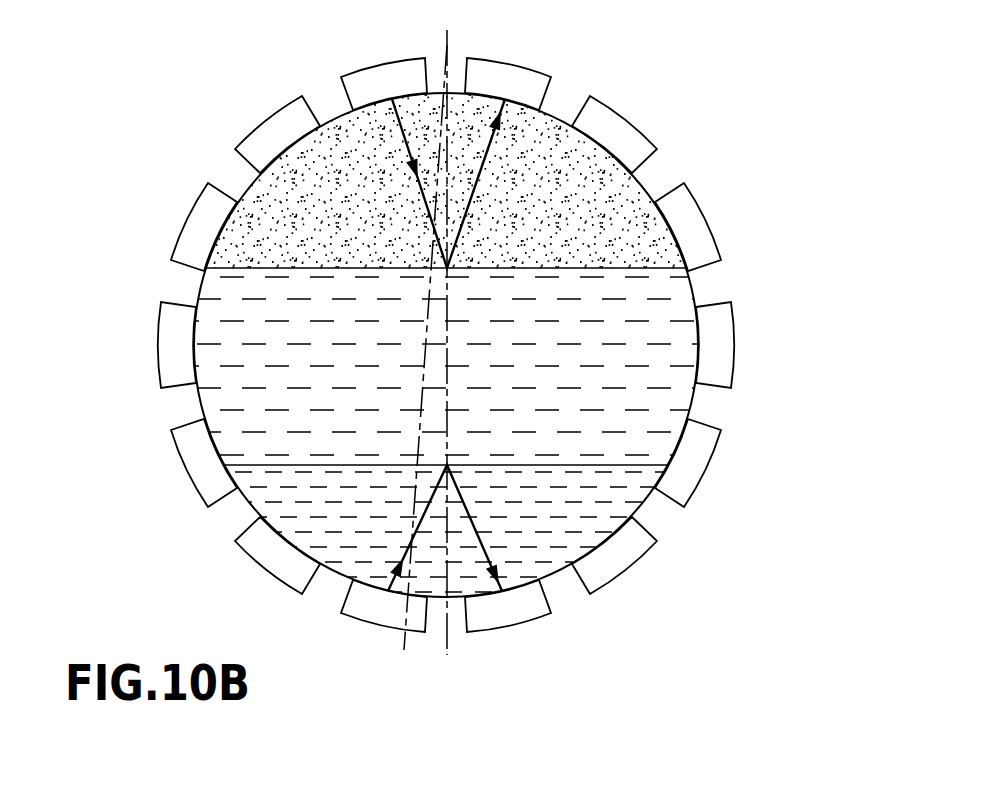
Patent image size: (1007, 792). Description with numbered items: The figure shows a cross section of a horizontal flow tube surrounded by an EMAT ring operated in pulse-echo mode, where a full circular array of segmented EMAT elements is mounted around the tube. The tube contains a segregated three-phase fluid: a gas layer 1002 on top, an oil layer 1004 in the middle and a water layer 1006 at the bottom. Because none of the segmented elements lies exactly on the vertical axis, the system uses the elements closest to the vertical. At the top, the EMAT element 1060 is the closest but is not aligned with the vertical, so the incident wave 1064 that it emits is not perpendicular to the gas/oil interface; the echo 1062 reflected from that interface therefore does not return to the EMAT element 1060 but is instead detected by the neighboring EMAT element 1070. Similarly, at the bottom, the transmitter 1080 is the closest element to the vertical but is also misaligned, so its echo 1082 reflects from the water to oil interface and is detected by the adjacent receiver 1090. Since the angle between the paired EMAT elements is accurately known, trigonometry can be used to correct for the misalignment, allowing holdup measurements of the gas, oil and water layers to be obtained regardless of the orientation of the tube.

The gas layer 1002 is at (575, 163).
The oil layer 1004 is at (638, 333).
The water layer 1006 is at (602, 507).
The EMAT element 1060 is at (362, 72).
The echo 1062 is at (488, 175).
The incident wave 1064 is at (440, 147).
The EMAT element 1070 is at (530, 70).
The transmitter 1080 is at (362, 620).
The echo 1082 is at (417, 523).
The receiver 1090 is at (530, 610).